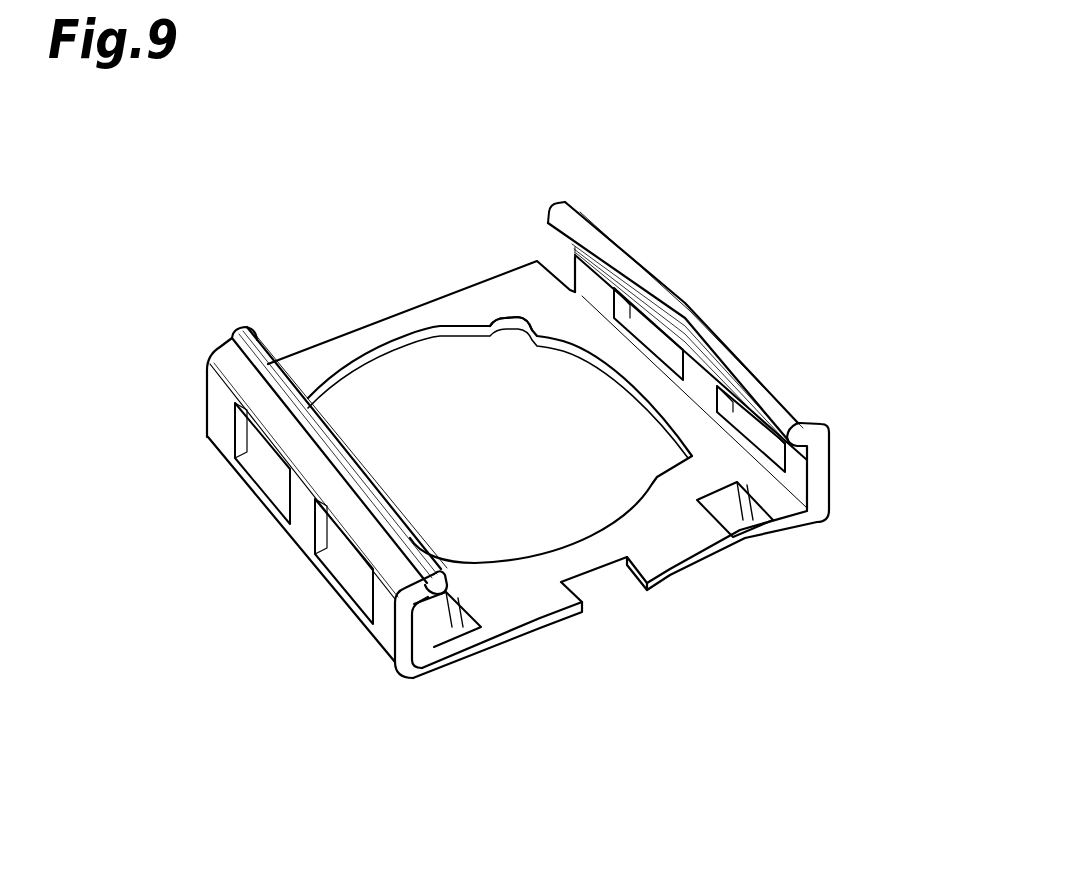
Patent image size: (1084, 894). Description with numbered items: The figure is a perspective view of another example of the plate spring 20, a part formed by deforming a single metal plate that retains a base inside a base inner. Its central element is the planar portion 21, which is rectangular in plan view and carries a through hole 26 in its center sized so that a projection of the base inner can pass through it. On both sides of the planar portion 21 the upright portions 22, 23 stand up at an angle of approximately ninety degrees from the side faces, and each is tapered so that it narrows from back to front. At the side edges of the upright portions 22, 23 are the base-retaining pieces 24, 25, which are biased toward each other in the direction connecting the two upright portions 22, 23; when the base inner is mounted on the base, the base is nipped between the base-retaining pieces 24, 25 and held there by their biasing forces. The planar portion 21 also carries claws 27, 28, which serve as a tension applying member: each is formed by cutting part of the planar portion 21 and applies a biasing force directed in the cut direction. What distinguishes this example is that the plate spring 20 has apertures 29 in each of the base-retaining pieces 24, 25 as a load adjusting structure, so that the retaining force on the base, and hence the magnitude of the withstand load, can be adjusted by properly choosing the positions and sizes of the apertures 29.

The plate spring 20 is at (633, 204).
The planar portion 21 is at (658, 557).
The upright portion 22 is at (390, 635).
The upright portion 23 is at (804, 476).
The base-retaining piece 24 is at (380, 490).
The base-retaining piece 25 is at (710, 350).
The through hole 26 is at (443, 333).
The claw 27 is at (438, 630).
The claw 28 is at (733, 513).
The aperture 29 is at (363, 580).